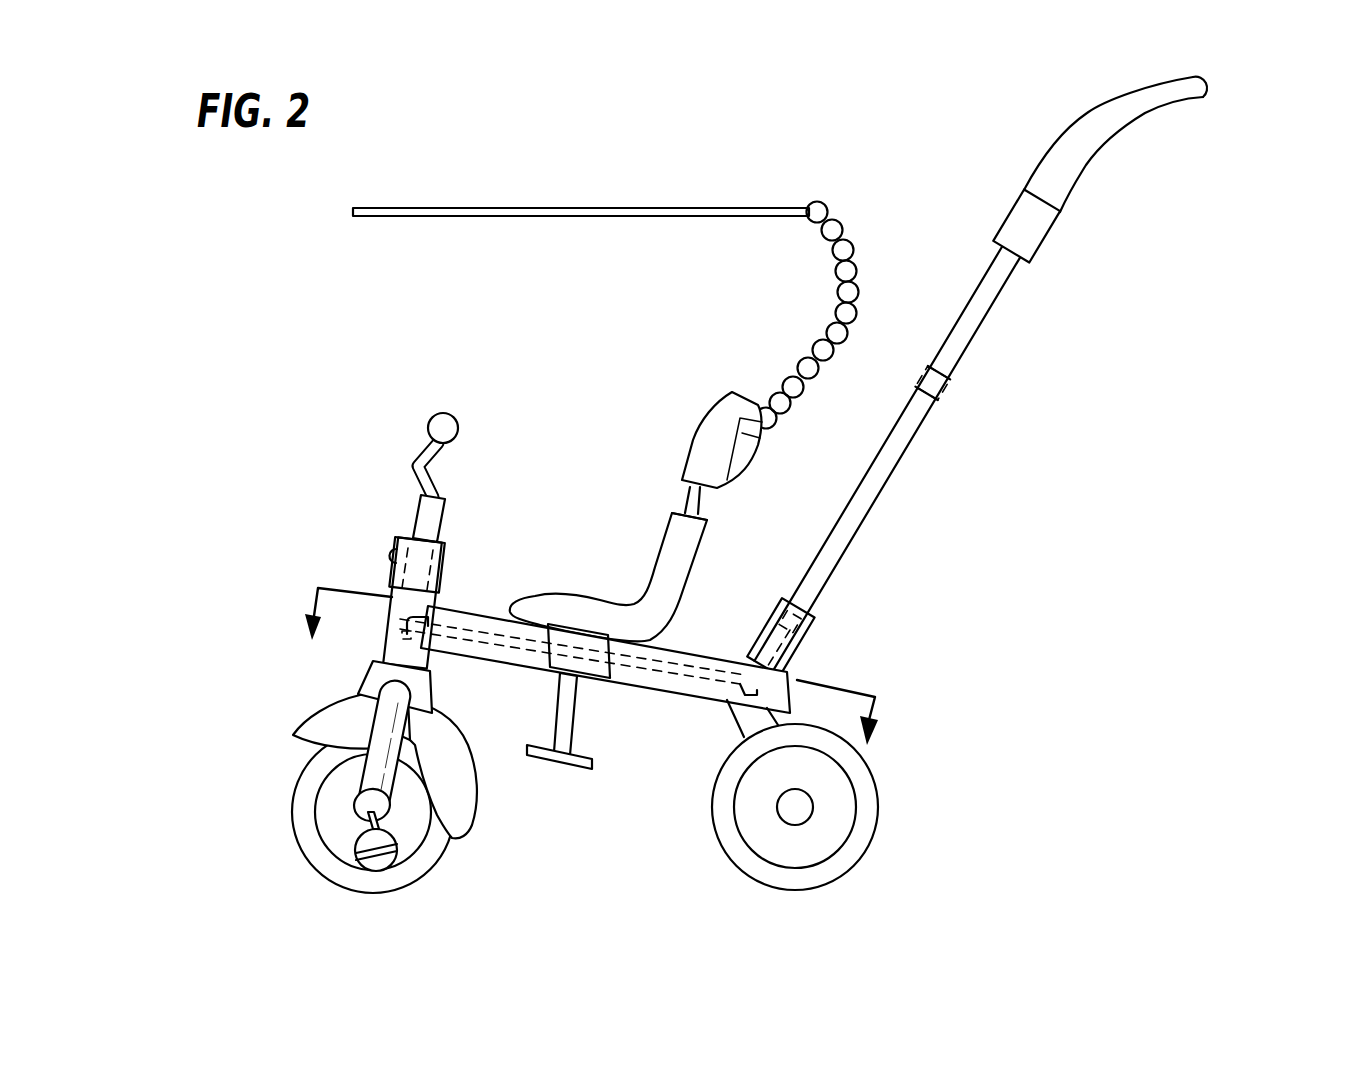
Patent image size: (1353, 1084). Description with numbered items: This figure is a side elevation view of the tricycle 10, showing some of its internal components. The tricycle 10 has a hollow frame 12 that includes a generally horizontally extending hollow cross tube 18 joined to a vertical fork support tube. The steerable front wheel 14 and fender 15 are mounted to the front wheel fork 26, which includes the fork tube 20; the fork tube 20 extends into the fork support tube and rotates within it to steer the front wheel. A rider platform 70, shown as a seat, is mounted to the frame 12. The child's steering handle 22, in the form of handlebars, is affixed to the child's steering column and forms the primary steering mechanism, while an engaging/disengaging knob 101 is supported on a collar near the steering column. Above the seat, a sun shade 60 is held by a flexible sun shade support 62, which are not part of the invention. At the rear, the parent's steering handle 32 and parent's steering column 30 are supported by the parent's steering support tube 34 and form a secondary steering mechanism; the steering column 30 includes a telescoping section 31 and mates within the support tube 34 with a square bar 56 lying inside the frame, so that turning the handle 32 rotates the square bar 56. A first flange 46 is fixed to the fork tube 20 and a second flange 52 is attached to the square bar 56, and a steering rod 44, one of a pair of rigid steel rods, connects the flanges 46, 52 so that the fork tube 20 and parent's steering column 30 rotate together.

The tricycle 10 is at (205, 326).
The hollow frame 12 is at (475, 582).
The steerable front wheel 14 is at (290, 805).
The fender 15 is at (465, 795).
The hollow cross tube 18 is at (485, 620).
The fork tube 20 is at (380, 595).
The steering handle 22 is at (442, 413).
The front wheel fork 26 is at (387, 722).
The parent's steering column 30 is at (945, 481).
The telescoping section 31 is at (990, 317).
The parent's steering handle 32 is at (1209, 88).
The parent's steering support tube 34 is at (815, 632).
The steering rod 44 is at (655, 668).
The first flange 46 is at (387, 624).
The second flange 52 is at (737, 697).
The square bar 56 is at (783, 657).
The sun shade 60 is at (581, 210).
The flexible sun shade support 62 is at (858, 270).
The rider platform 70 is at (658, 552).
The engaging/disengaging knob 101 is at (390, 555).